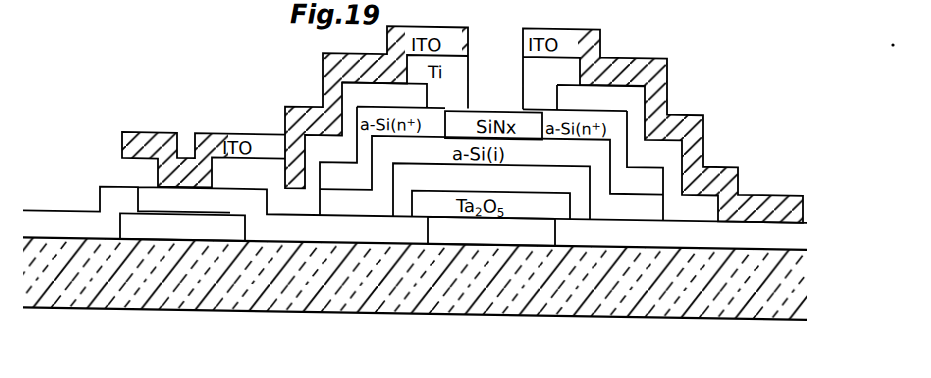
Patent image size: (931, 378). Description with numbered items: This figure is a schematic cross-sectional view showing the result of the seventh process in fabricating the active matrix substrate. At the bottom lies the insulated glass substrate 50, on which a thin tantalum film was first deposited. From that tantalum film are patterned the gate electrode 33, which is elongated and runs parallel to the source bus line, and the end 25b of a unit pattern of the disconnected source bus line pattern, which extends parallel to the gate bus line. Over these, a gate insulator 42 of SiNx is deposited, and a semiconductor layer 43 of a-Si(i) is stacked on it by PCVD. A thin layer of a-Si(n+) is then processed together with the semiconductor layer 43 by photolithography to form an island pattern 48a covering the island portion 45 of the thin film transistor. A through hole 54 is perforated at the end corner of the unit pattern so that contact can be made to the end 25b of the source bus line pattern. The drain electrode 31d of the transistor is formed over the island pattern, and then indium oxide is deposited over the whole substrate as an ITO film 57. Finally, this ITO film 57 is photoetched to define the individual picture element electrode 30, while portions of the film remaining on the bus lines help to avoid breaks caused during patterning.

The end of unit pattern 25b is at (215, 227).
The picture element electrode 30 is at (773, 183).
The drain electrode 31d is at (693, 194).
The gate electrode 33 is at (513, 225).
The gate insulator 42 is at (778, 221).
The semiconductor layer 43 is at (638, 195).
The island portion 45 is at (658, 3).
The island pattern 48a is at (637, 168).
The insulated glass substrate 50 is at (723, 278).
The through hole 54 is at (185, 129).
The ITO film 57 is at (613, 46).